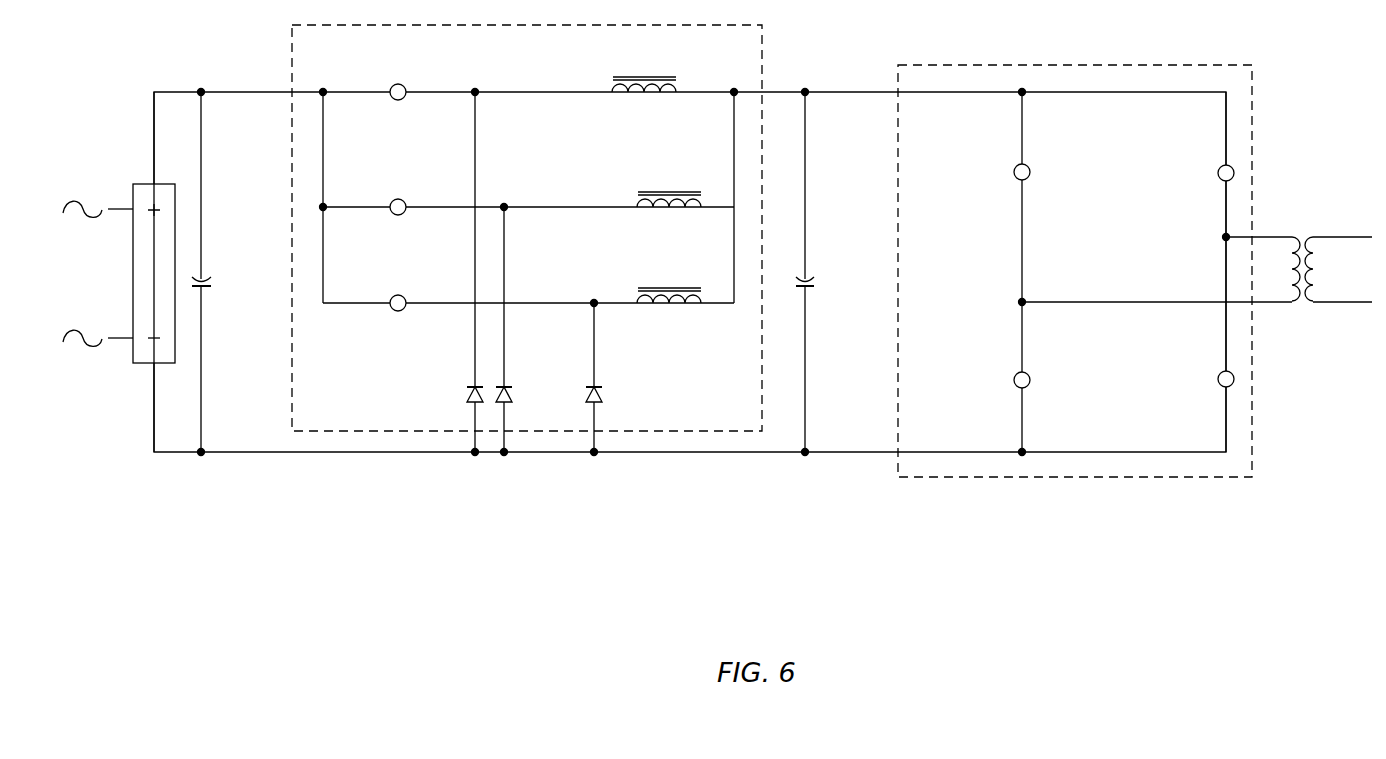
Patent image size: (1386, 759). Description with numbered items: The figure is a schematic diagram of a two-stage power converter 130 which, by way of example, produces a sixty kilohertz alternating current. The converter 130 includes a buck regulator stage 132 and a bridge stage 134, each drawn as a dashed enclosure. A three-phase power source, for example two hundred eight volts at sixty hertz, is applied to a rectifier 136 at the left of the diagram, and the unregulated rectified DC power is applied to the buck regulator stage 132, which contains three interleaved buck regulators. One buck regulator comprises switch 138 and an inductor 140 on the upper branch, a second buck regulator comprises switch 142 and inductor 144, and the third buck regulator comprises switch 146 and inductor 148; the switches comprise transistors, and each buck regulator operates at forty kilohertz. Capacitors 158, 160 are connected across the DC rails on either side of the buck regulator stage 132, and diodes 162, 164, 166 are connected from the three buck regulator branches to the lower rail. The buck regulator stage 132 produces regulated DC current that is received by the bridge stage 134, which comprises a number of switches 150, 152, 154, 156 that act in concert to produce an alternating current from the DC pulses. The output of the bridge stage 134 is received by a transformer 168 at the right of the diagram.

The converter 130 is at (617, 562).
The buck regulator stage 132 is at (292, 46).
The bridge stage 134 is at (897, 78).
The rectifier 136 is at (133, 274).
The switch 138 is at (398, 100).
The first inductor 140 is at (655, 96).
The switch 142 is at (398, 215).
The inductor 144 is at (685, 190).
The switch 146 is at (398, 311).
The inductor 148 is at (685, 286).
The switch 150 is at (1030, 174).
The switch 152 is at (1218, 171).
The switch 154 is at (1030, 382).
The switch 156 is at (1218, 378).
The capacitor 158 is at (212, 283).
The capacitor 160 is at (815, 285).
The diode 162 is at (467, 395).
The diode 164 is at (513, 395).
The diode 166 is at (603, 395).
The transformer 168 is at (1301, 242).